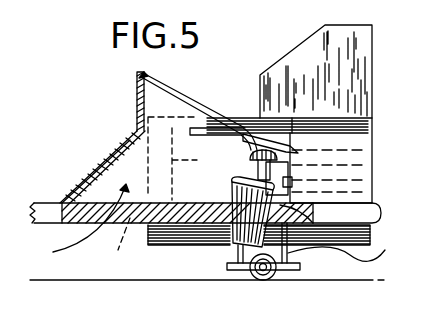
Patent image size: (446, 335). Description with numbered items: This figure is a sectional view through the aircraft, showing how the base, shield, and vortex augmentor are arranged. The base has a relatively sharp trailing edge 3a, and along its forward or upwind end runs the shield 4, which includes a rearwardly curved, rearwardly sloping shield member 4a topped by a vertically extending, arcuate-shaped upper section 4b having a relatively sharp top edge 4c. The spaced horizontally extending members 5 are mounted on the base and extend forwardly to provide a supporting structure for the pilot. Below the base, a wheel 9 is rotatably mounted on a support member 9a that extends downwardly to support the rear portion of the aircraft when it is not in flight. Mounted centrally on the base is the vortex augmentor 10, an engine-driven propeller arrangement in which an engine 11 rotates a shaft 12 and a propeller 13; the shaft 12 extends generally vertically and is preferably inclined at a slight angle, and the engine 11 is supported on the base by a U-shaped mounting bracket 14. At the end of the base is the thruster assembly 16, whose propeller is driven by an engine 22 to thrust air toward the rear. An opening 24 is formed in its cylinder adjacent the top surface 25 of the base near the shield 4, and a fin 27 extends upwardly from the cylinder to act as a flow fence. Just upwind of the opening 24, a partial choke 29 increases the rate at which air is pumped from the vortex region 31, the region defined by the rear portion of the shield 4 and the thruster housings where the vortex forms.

The trailing edge 3a is at (320, 215).
The shield 4 is at (105, 151).
The shield member 4a is at (123, 143).
The upper section 4b is at (135, 80).
The top edge 4c is at (147, 73).
The horizontally extending members 5 is at (44, 205).
The wheel 9 is at (266, 276).
The support member 9a is at (289, 253).
The vortex augmentor 10 is at (292, 163).
The engine 11 is at (232, 213).
The shaft 12 is at (229, 152).
The propeller 13 is at (285, 160).
The mounting bracket 14 is at (232, 143).
The thruster assembly 16 is at (357, 135).
The engine 22 is at (232, 140).
The opening 24 is at (292, 118).
The top surface 25 is at (333, 205).
The fin 27 is at (357, 50).
The partial choke 29 is at (115, 244).
The vortex region 31 is at (80, 224).